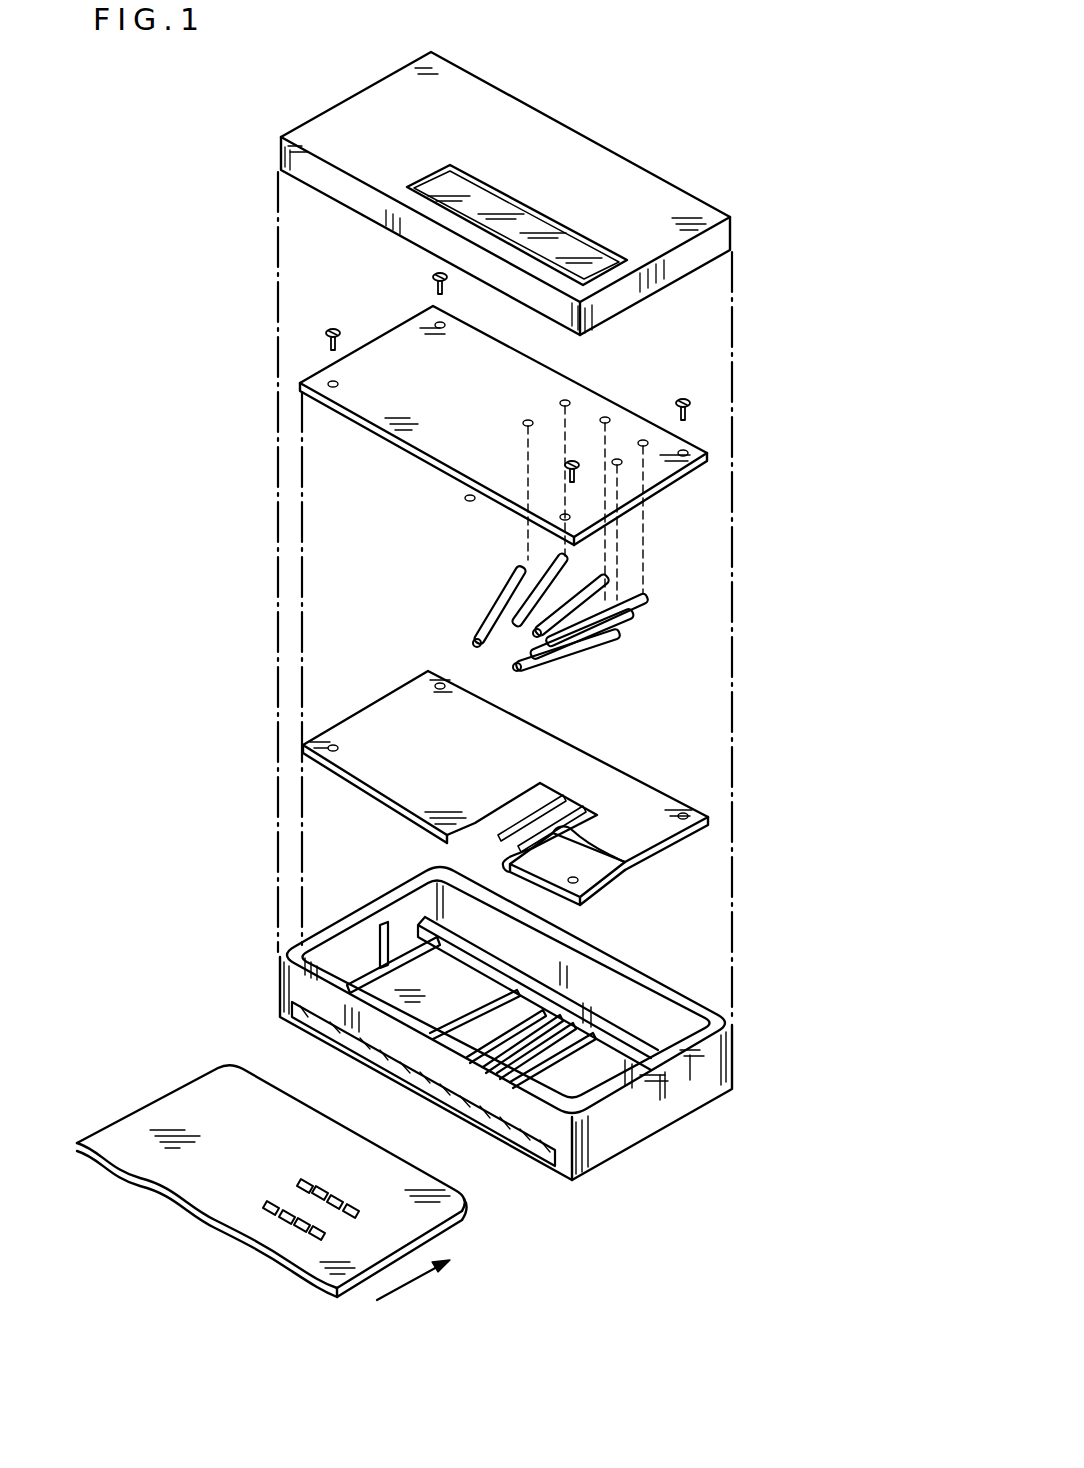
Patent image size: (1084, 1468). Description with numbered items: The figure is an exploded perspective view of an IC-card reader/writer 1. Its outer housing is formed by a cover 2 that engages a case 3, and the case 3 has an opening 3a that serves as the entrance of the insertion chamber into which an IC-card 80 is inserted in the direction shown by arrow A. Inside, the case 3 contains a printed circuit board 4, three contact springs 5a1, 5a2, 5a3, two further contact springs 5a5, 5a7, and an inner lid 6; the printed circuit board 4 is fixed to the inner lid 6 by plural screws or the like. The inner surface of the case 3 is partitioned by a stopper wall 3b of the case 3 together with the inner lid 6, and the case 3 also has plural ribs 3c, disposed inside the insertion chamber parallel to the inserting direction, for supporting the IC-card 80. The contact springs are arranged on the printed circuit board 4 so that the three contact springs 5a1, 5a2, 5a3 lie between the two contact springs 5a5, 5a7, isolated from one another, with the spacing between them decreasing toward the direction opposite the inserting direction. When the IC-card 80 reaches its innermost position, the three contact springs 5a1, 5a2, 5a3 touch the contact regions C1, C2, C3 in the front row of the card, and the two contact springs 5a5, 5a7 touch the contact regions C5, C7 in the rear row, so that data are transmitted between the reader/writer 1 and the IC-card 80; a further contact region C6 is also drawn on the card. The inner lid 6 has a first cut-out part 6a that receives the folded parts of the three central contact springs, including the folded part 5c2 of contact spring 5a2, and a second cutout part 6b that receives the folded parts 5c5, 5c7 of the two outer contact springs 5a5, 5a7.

The IC-card reader/writer 1 is at (740, 393).
The cover 2 is at (640, 178).
The case 3 is at (693, 1100).
The opening 3a is at (507, 1137).
The stopper wall 3b is at (620, 1038).
The ribs 3c is at (415, 940).
The printed circuit board 4 is at (630, 423).
The contact spring 5a1 is at (637, 623).
The contact spring 5a2 is at (640, 583).
The contact spring 5a3 is at (550, 563).
The contact spring 5a5 is at (598, 653).
The contact spring 5a7 is at (490, 610).
The folded part 5c2 is at (520, 644).
The folded part 5c5 is at (527, 668).
The folded part 5c7 is at (468, 648).
The inner lid 6 is at (623, 790).
The first cut-out part 6a is at (623, 870).
The second cutout part 6b is at (573, 910).
The IC-card 80 is at (177, 1103).
The contact region C1 is at (357, 1212).
The contact region C2 is at (345, 1200).
The contact region C3 is at (322, 1186).
The contact region C5 is at (307, 1237).
The card contact pad C6 is at (293, 1228).
The contact region C7 is at (277, 1222).